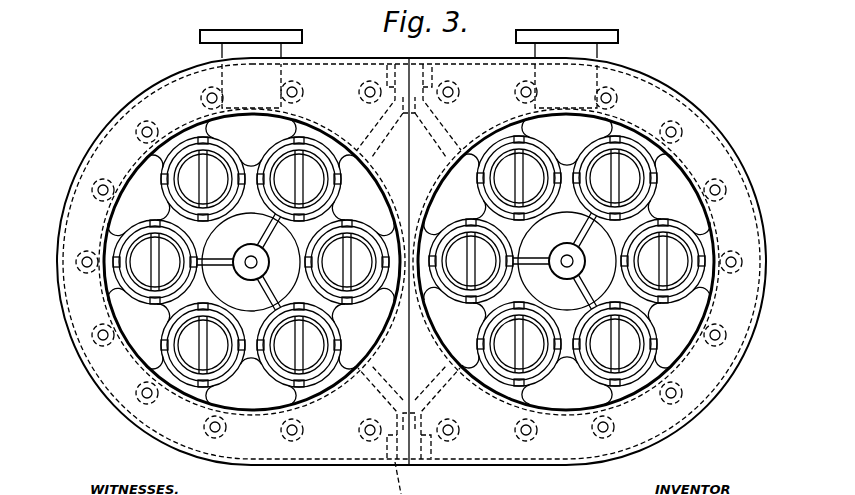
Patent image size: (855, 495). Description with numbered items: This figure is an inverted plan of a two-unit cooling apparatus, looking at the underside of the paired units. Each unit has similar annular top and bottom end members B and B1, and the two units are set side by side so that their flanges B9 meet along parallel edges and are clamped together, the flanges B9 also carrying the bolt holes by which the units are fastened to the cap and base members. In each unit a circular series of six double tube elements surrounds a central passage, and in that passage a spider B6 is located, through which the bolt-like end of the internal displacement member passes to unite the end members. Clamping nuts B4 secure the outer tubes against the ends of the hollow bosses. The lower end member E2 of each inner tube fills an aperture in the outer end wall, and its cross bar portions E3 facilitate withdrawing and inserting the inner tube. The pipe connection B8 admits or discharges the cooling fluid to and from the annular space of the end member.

The annular top end member B is at (703, 140).
The annular bottom end member B1 is at (409, 261).
The clamping nuts B4 is at (83, 265).
The spiders B6 is at (268, 262).
The pipe connection B8 is at (648, 53).
The flanges B9 is at (80, 205).
The lower end member of inner tube E2 is at (178, 356).
The cross bar portions E3 is at (203, 362).